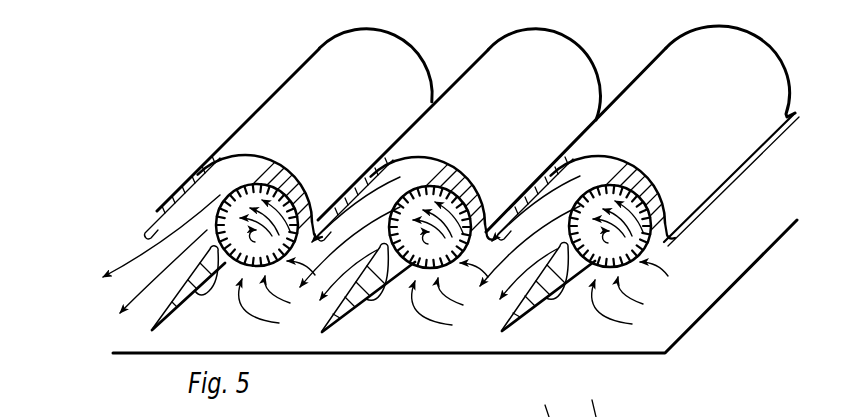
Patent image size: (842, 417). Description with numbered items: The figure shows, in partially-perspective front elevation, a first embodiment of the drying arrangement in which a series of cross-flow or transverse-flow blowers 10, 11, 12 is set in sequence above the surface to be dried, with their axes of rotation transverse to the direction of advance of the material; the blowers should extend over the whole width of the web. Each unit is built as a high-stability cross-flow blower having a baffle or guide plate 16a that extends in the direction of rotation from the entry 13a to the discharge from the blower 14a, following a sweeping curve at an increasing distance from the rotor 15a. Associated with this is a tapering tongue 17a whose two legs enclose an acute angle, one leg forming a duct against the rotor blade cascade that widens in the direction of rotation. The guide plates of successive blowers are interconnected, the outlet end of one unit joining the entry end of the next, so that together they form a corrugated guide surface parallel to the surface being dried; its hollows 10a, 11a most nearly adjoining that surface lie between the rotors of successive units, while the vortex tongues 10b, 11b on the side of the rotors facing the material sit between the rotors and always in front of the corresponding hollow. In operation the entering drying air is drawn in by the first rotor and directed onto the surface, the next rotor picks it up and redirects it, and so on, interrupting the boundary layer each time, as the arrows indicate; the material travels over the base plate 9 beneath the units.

The base plate 9 is at (385, 355).
The cross-flow blower 10 is at (650, 220).
The hollow of the guide plate 10a is at (487, 228).
The vortex tongue 10b is at (521, 298).
The cross-flow blower 11 is at (455, 197).
The hollow of the guide plate 11a is at (317, 217).
The vortex tongue 11b is at (353, 307).
The cross-flow blower 12 is at (243, 185).
The entry 13a is at (653, 248).
The discharge from the blower 14a is at (557, 237).
The rotor 15a is at (633, 193).
The baffle or guide plate 16a is at (628, 178).
The tapering tongue 17a is at (182, 292).